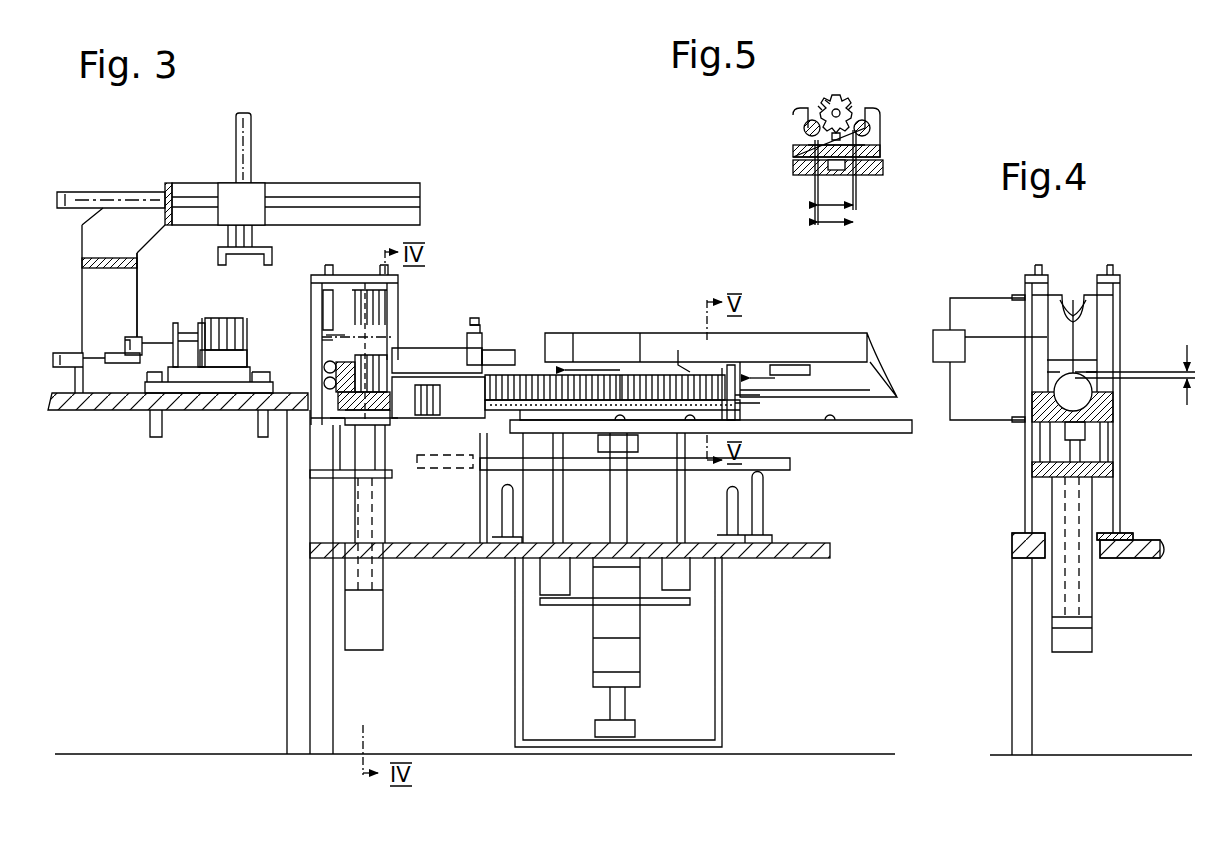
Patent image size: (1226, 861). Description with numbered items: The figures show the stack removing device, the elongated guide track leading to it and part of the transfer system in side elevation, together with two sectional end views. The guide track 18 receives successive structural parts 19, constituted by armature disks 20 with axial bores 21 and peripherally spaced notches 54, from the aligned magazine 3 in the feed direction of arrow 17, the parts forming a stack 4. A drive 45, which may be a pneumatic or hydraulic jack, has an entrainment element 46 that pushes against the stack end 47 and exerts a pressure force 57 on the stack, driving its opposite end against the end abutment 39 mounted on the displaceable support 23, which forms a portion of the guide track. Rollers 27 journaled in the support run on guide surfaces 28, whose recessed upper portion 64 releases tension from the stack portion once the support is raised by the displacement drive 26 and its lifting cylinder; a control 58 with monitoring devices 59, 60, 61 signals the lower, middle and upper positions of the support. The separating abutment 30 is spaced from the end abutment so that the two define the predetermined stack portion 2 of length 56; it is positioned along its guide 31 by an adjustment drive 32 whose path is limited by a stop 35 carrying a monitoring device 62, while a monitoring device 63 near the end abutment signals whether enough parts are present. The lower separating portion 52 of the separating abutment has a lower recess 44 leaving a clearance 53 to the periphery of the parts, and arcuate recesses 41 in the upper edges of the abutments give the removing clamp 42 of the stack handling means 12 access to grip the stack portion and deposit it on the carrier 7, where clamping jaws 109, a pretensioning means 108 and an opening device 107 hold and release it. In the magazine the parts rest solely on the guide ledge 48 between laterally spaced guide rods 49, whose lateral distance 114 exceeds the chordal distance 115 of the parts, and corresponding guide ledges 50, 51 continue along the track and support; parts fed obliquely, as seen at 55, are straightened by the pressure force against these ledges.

In FIG. 3, the predetermined stack portion 2 is at (220, 318).
In FIG. 3, the magazine 3 is at (503, 417).
In FIG. 5, the magazine 3 is at (865, 140).
In FIG. 3, the stack 4 is at (633, 375).
In FIG. 3, the carrier 7 is at (187, 370).
In FIG. 3, the stack handling means 12 is at (287, 155).
In FIG. 3, the arrow indicating feed direction 17 is at (598, 365).
In FIG. 3, the guide track 18 is at (430, 360).
In FIG. 4, the structural parts 19 is at (1090, 402).
In FIG. 5, the structural parts 19 is at (837, 90).
In FIG. 5, the armature disks 20 is at (826, 102).
In FIG. 4, the axial bores 21 is at (1058, 390).
In FIG. 5, the axial bores 21 is at (840, 112).
In FIG. 3, the displaceable support 23 is at (325, 358).
In FIG. 3, the displacement drive 26 is at (382, 628).
In FIG. 3, the rollers 27 is at (327, 385).
In FIG. 3, the guide surfaces 28 is at (447, 258).
In FIG. 4, the guide surfaces 28 is at (1075, 320).
In FIG. 4, the separating abutment 30 is at (1103, 318).
In FIG. 3, the guide for separating abutment 31 is at (425, 380).
In FIG. 3, the adjustment drive 32 is at (495, 350).
In FIG. 3, the stop 35 is at (480, 348).
In FIG. 3, the end abutment 39 is at (350, 408).
In FIG. 4, the arcuate recesses 41 is at (1083, 305).
In FIG. 3, the removing clamp 42 is at (272, 255).
In FIG. 3, the lower recess 44 is at (395, 392).
In FIG. 4, the lower recess 44 is at (1065, 372).
In FIG. 3, the drive 45 is at (843, 335).
In FIG. 3, the entrainment element 46 is at (740, 385).
In FIG. 3, the stack end 47 is at (735, 380).
In FIG. 3, the guide ledge 48 is at (750, 420).
In FIG. 5, the guide ledge 48 is at (834, 147).
In FIG. 3, the guide rods 49 is at (655, 400).
In FIG. 5, the guide rods 49 is at (805, 128).
In FIG. 3, the guide ledge 50 is at (410, 418).
In FIG. 3, the support ledge 51 is at (385, 420).
In FIG. 4, the support ledge 51 is at (1085, 405).
In FIG. 4, the lower separating portion 52 is at (1070, 375).
In FIG. 4, the clearance 53 is at (1188, 397).
In FIG. 5, the notches 54 is at (819, 108).
In FIG. 3, the oblique position 55 is at (695, 375).
In FIG. 3, the length of stack portion 56 is at (383, 370).
In FIG. 3, the pressure force 57 is at (765, 380).
In FIG. 4, the control 58 is at (947, 342).
In FIG. 4, the monitoring device 59 is at (1018, 422).
In FIG. 4, the monitoring device 60 is at (1075, 340).
In FIG. 4, the monitoring device 61 is at (1020, 295).
In FIG. 3, the monitoring device 62 is at (476, 318).
In FIG. 3, the monitoring device 63 is at (335, 420).
In FIG. 3, the recessed upper guide portion 64 is at (326, 335).
In FIG. 3, the opening device 107 is at (152, 357).
In FIG. 3, the pretensioning means 108 is at (203, 298).
In FIG. 3, the clamping jaws 109 is at (245, 342).
In FIG. 5, the lateral distance 114 is at (845, 222).
In FIG. 5, the chordal distance 115 is at (842, 203).